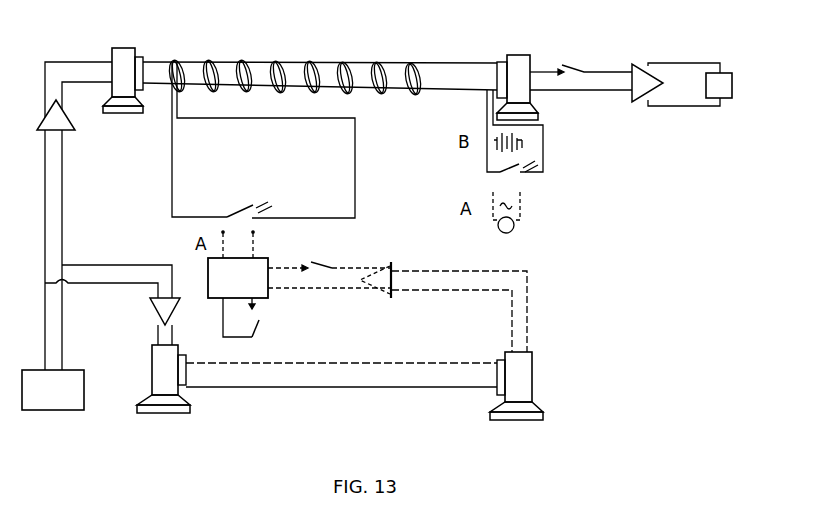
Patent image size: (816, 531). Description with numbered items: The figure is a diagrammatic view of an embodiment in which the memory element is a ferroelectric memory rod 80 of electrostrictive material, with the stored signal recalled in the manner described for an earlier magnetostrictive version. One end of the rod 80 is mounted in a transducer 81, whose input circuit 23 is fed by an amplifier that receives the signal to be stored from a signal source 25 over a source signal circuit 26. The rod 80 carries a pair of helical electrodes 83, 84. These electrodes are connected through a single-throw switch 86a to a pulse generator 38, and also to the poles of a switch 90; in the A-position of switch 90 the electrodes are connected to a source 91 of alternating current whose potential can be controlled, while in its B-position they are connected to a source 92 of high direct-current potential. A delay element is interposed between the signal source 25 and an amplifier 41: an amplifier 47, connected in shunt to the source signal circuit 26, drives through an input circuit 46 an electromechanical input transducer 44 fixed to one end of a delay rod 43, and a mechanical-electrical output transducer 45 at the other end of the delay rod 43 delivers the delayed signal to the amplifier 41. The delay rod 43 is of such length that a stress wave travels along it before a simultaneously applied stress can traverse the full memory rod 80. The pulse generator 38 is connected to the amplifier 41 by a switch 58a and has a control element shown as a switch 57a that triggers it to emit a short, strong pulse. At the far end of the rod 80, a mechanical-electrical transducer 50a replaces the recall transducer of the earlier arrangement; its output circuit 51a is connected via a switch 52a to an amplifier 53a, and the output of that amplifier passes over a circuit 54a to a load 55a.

The input circuit 23 is at (91, 62).
The signal source 25 is at (84, 381).
The source signal circuit 26 is at (45, 228).
The pulse generator 38 is at (208, 280).
The amplifier 41 is at (393, 266).
The delay rod 43 is at (337, 362).
The electromechanical input transducer 44 is at (178, 352).
The mechanical-electrical output transducer 45 is at (533, 368).
The input circuit 46 is at (178, 312).
The amplifier 47 is at (98, 265).
The mechanical-electrical transducer 50a is at (515, 55).
The output circuit 51a is at (572, 90).
The switch 52a is at (570, 64).
The amplifier 53a is at (640, 64).
The circuit 54a is at (690, 108).
The load 55a is at (730, 98).
The switch 57a is at (259, 330).
The switch 58a is at (316, 264).
The ferroelectric memory rod 80 is at (151, 60).
The transducer 81 is at (118, 47).
The helical electrode 83 is at (283, 61).
The helical electrode 84 is at (289, 61).
The single-throw switch 86a is at (272, 209).
The switch 90 is at (509, 199).
The source of alternating current 91 is at (513, 229).
The source of high direct current potential 92 is at (533, 142).